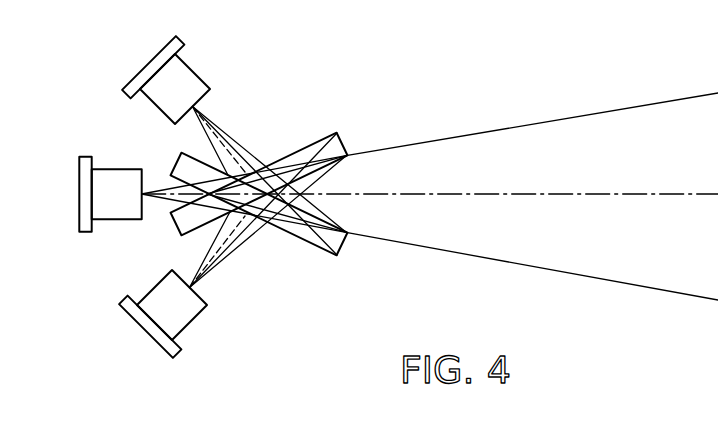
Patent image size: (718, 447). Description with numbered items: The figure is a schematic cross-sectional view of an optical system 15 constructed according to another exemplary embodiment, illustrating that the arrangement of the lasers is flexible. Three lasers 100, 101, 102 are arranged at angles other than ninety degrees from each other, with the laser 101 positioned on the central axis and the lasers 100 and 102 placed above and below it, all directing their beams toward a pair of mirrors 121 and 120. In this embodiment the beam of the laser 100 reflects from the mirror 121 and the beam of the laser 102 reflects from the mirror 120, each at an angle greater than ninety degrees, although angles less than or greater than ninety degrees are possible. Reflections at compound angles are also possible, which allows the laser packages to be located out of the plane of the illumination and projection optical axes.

The optical system 15 is at (296, 314).
The laser 100 is at (145, 65).
The laser 101 is at (79, 205).
The laser 102 is at (140, 337).
The mirror 120 is at (344, 153).
The mirror 121 is at (341, 246).